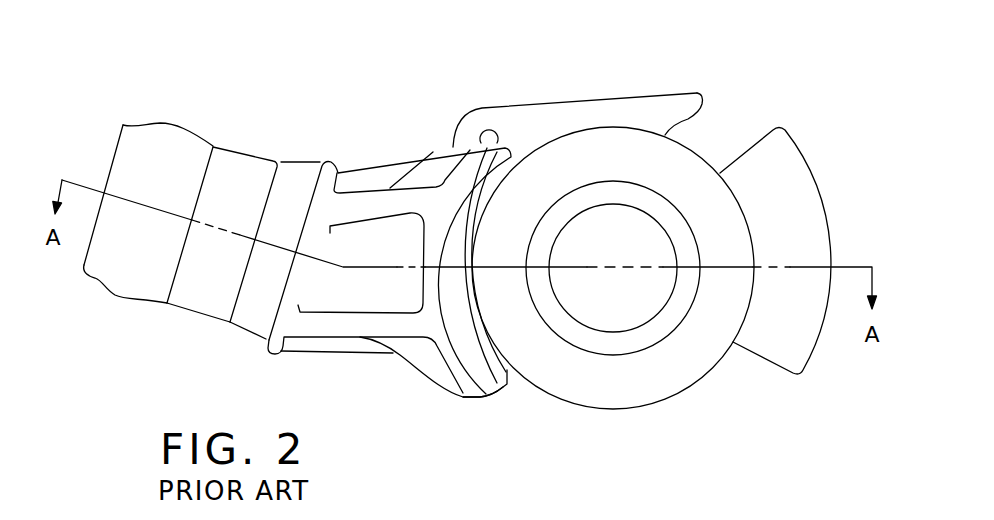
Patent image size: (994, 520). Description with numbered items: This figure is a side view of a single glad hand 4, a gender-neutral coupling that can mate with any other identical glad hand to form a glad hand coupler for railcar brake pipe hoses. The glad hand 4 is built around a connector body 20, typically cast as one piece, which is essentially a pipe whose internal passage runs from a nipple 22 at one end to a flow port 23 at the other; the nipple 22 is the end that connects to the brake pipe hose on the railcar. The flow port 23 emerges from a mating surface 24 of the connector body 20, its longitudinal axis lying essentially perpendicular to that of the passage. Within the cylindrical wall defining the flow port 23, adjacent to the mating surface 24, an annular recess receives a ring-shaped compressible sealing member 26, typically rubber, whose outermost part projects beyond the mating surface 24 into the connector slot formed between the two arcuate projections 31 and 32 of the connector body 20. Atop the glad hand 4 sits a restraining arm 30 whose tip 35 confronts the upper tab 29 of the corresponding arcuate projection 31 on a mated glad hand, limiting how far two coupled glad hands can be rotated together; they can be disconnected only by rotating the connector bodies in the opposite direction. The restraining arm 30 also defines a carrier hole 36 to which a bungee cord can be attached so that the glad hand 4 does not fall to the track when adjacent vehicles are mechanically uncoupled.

The glad hand 4 is at (655, 241).
The connector body 20 is at (372, 172).
The nipple 22 is at (245, 163).
The flow port 23 is at (582, 308).
The mating surface 24 is at (702, 360).
The sealing member 26 is at (643, 338).
The upper tab 29 is at (502, 386).
The restraining arm 30 is at (552, 112).
The arcuate projection 31 is at (468, 182).
The arcuate projection 32 is at (793, 158).
The tip 35 is at (693, 93).
The carrier hole 36 is at (490, 134).